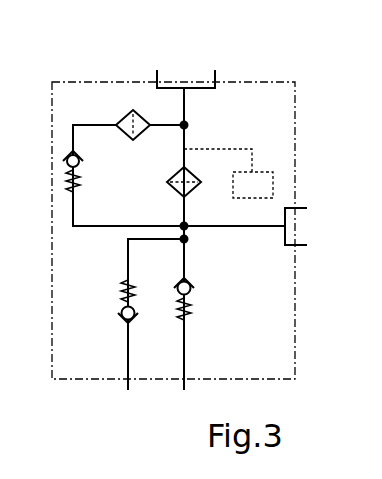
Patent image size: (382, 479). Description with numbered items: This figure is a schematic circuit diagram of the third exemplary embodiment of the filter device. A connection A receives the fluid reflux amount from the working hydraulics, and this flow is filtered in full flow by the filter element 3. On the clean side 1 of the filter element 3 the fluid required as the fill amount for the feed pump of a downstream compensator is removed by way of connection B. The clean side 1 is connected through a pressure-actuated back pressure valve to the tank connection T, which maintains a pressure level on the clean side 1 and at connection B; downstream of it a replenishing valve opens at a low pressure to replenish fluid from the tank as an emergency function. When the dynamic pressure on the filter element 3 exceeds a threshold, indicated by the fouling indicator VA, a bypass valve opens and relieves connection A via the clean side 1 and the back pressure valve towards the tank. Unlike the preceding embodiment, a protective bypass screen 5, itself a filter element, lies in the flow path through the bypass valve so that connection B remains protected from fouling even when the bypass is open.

The clean side 1 is at (184, 226).
The filter element 3 is at (195, 173).
The protective bypass screen 5 is at (124, 115).